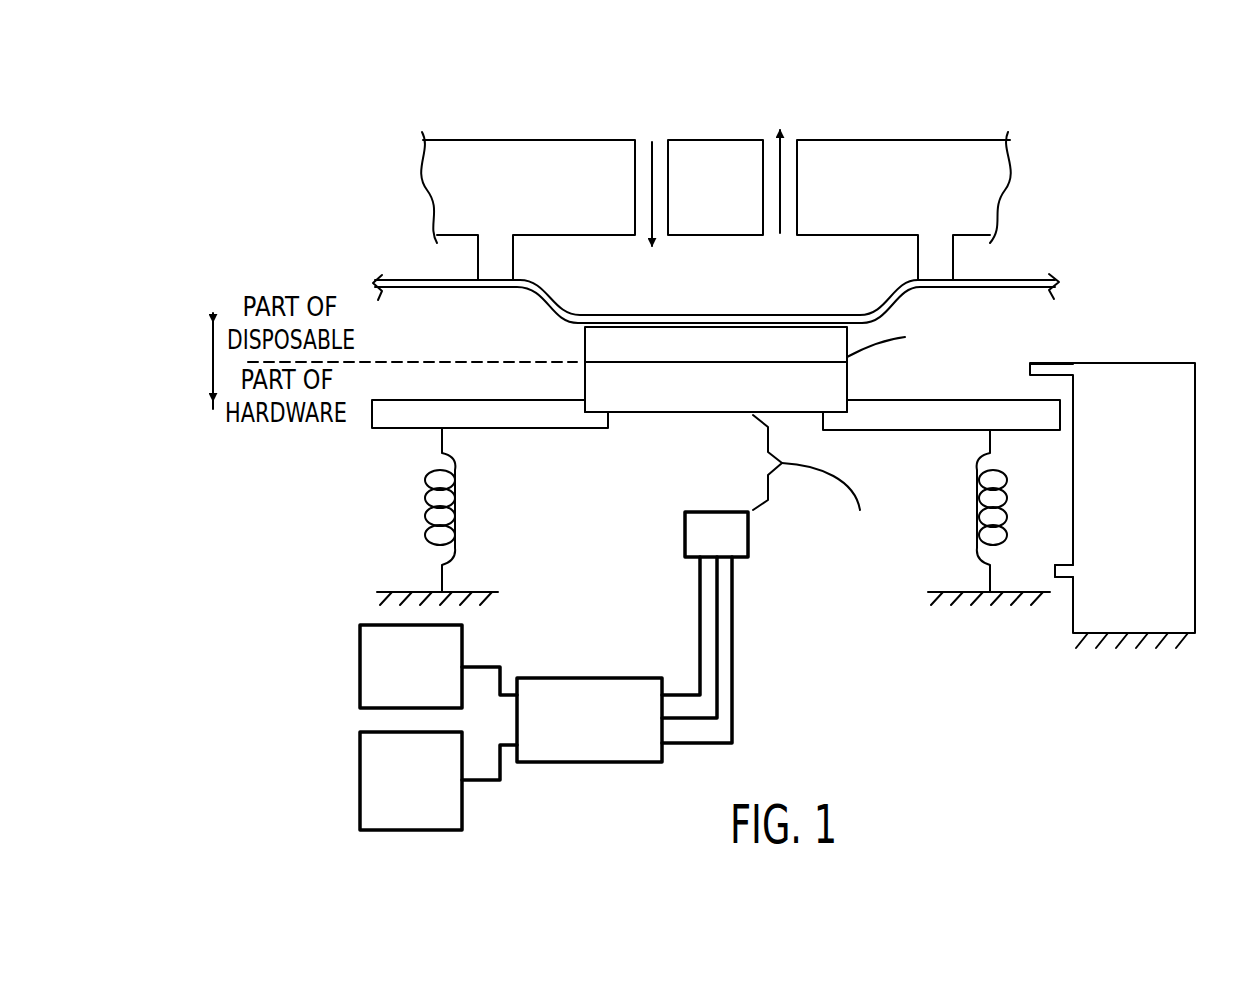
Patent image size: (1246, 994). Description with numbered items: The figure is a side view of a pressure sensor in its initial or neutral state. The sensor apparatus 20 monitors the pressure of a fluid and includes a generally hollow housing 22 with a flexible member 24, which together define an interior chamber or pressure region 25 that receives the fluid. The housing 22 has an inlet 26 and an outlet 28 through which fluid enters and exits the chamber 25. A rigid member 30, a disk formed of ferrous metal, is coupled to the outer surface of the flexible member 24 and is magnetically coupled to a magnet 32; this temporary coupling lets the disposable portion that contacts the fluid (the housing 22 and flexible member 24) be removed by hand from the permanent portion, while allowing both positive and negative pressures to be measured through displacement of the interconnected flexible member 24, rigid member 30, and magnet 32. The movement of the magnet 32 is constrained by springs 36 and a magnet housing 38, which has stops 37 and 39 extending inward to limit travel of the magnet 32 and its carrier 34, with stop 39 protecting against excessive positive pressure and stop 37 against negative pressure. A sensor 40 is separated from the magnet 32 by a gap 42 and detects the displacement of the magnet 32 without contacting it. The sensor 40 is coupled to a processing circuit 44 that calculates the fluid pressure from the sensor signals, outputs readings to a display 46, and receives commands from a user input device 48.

The sensor apparatus 20 is at (1015, 112).
The housing 22 is at (518, 153).
The flexible member 24 is at (1037, 277).
The chamber 25 is at (885, 277).
The inlet 26 is at (643, 158).
The outlet 28 is at (790, 157).
The rigid member 30 is at (595, 345).
The magnet 32 is at (598, 387).
The carrier 34 is at (515, 418).
The springs 36 is at (422, 500).
The stop 37 is at (1028, 365).
The magnet housing 38 is at (1160, 362).
The stop 39 is at (1068, 578).
The sensor 40 is at (683, 530).
The gap 42 is at (688, 460).
The processing circuit 44 is at (583, 678).
The display 46 is at (360, 665).
The user input device 48 is at (360, 780).